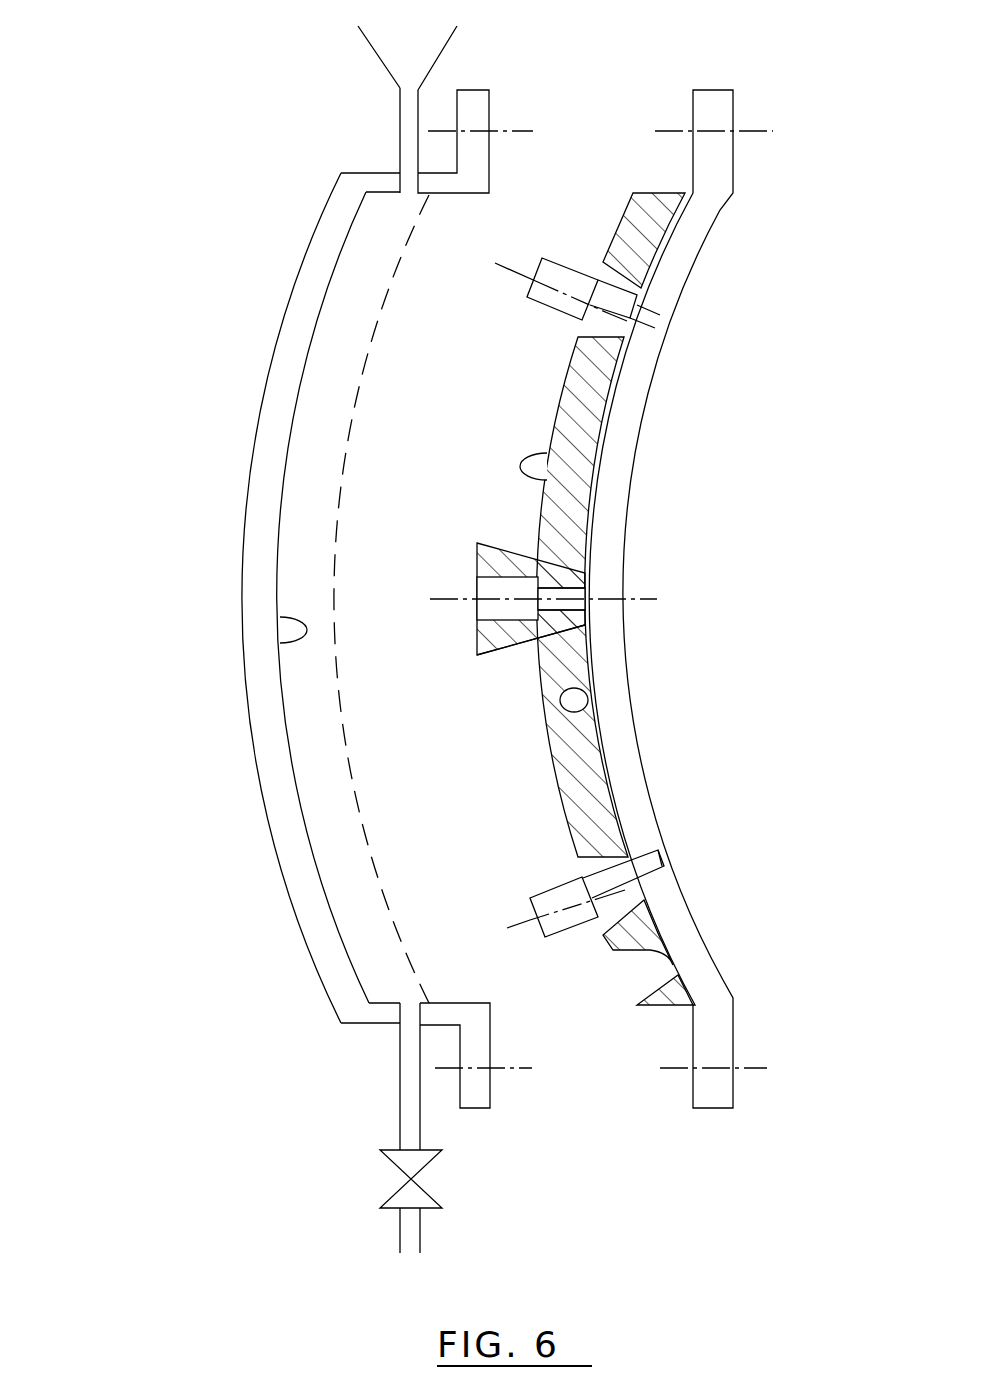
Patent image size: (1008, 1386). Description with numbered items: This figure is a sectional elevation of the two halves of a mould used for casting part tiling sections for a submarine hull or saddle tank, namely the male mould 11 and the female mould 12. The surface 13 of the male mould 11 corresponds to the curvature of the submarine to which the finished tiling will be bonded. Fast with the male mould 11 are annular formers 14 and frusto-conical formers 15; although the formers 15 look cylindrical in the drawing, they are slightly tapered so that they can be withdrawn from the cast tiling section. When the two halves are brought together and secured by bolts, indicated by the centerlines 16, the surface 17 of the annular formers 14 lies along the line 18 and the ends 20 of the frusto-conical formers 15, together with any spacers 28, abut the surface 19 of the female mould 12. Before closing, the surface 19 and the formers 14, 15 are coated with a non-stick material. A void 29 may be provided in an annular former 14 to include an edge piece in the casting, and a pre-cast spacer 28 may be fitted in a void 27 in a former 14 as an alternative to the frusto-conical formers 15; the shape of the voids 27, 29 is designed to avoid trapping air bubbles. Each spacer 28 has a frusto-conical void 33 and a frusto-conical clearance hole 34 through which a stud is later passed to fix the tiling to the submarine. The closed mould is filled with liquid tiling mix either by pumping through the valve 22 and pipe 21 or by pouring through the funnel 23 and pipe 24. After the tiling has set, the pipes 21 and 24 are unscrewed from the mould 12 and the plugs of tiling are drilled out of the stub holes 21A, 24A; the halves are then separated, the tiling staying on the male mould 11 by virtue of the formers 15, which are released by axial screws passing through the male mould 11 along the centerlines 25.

The male mould 11 is at (603, 518).
The female mould 12 is at (253, 597).
The surface 13 is at (580, 700).
The annular former 14 is at (650, 237).
The frusto-conical former 15 is at (583, 288).
The centerlines 16 is at (665, 130).
The surface 17 is at (548, 458).
The line 18 is at (350, 402).
The surface 19 is at (300, 637).
The end 20 is at (540, 288).
The pipe 21 is at (412, 1098).
The stub hole 21A is at (408, 1017).
The valve 22 is at (412, 1162).
The funnel 23 is at (386, 68).
The pipe 24 is at (408, 131).
The stub hole 24A is at (410, 182).
The centerlines 25 is at (672, 333).
The void 27 is at (627, 321).
The pre-cast spacer 28 is at (477, 645).
The void 29 is at (650, 973).
The frusto-conical void 33 is at (530, 587).
The frusto-conical clearance hole 34 is at (588, 612).